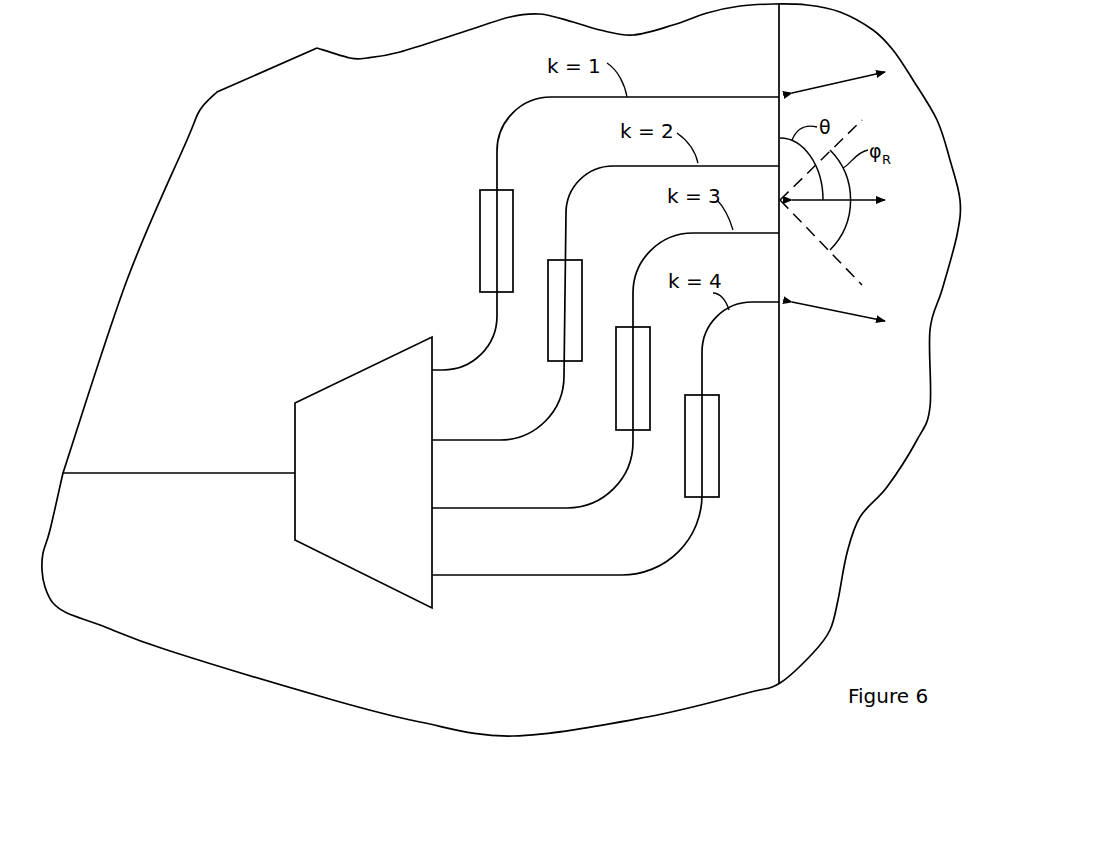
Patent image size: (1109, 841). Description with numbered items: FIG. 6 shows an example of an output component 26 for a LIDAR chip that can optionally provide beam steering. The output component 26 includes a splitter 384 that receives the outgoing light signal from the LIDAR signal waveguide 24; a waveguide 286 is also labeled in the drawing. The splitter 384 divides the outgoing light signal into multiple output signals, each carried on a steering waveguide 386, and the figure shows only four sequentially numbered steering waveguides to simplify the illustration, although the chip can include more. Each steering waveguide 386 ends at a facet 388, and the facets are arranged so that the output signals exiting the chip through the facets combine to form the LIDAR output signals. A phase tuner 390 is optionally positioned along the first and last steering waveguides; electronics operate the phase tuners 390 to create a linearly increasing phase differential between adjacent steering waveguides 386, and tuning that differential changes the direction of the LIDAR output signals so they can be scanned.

The LIDAR signal waveguide 24 is at (185, 473).
The output component 26 is at (352, 232).
The splitter 384 is at (390, 355).
The steering waveguide 386 is at (543, 417).
The waveguide 286 is at (667, 238).
The facet 388 is at (779, 97).
The phase tuner 390 is at (480, 233).